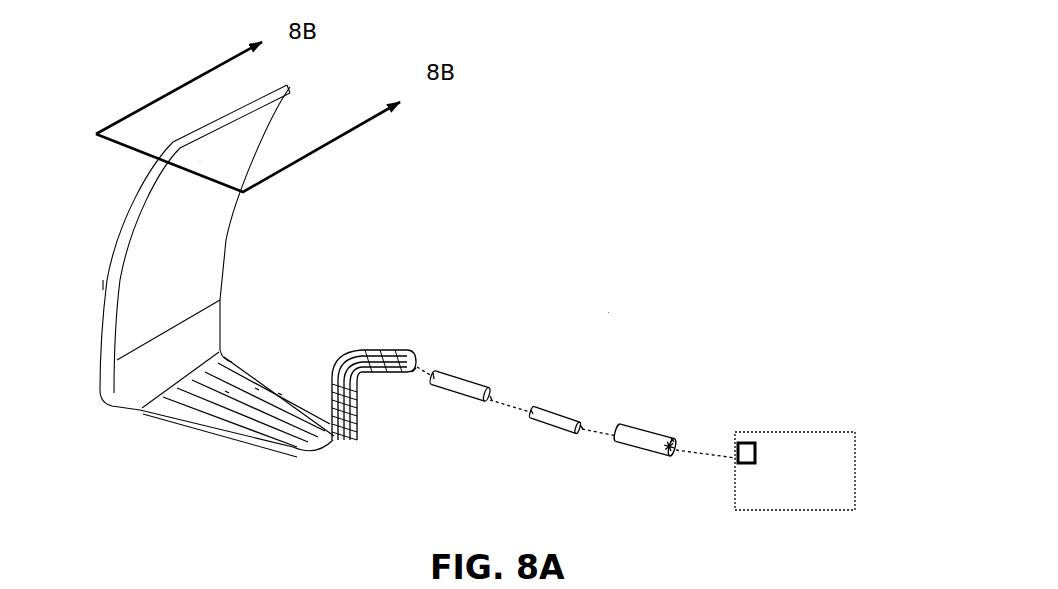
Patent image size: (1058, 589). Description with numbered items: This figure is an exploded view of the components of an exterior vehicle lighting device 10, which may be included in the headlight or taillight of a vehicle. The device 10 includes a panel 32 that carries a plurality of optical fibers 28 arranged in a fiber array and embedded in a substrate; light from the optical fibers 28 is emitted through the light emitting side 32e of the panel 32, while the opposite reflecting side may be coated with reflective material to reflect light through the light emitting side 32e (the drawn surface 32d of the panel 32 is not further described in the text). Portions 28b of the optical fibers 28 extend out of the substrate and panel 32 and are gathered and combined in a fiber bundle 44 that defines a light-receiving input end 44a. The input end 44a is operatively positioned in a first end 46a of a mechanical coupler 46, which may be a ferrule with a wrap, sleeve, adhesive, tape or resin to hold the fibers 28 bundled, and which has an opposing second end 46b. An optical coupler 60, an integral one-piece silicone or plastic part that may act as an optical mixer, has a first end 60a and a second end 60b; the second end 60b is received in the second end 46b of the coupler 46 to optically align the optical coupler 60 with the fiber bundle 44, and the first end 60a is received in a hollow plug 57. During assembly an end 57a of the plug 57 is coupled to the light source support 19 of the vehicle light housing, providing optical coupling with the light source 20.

The vehicle lighting device 10 is at (608, 312).
The light source support 19 is at (855, 447).
The light source 20 is at (750, 443).
The optical fibers 28 is at (215, 400).
The portions of the optical fibers 28b is at (227, 393).
The panel 32 is at (118, 221).
The light guide front surface 32d is at (200, 257).
The light emitting side 32e is at (108, 283).
The fiber bundle 44 is at (397, 353).
The input end 44a is at (414, 374).
The mechanical coupler 46 is at (467, 378).
The first end of the mechanical coupler 46a is at (433, 373).
The second end of the mechanical coupler 46b is at (493, 398).
The hollow plug 57 is at (650, 432).
The end of the plug 57a is at (672, 440).
The optical coupler 60 is at (550, 423).
The first end of the optical coupler 60a is at (582, 427).
The second end of the optical coupler 60b is at (532, 412).